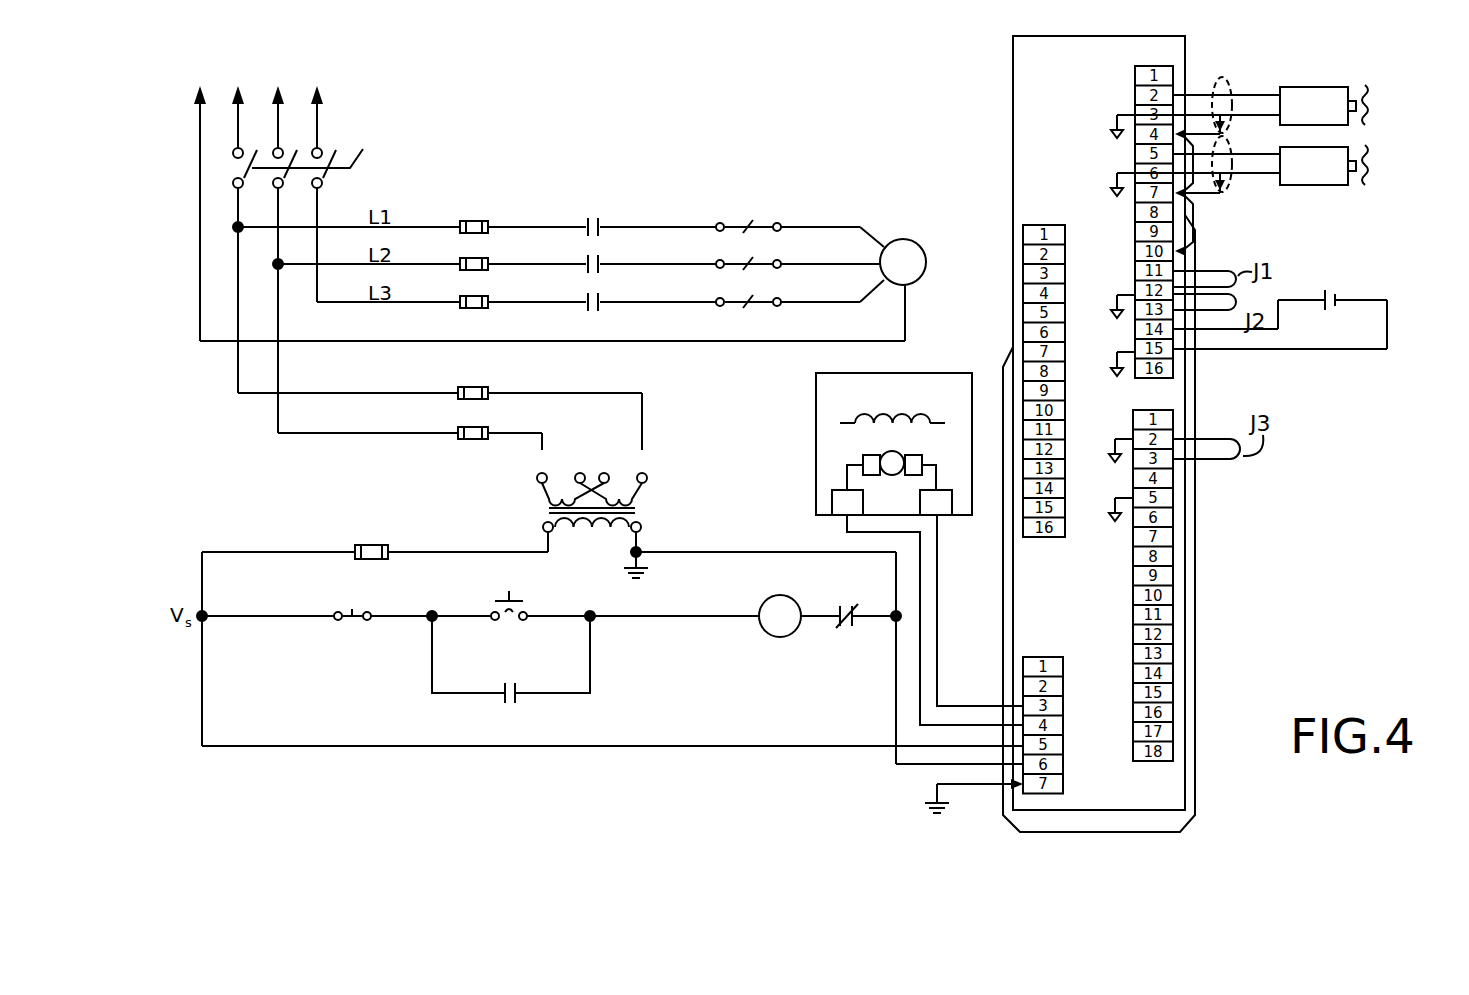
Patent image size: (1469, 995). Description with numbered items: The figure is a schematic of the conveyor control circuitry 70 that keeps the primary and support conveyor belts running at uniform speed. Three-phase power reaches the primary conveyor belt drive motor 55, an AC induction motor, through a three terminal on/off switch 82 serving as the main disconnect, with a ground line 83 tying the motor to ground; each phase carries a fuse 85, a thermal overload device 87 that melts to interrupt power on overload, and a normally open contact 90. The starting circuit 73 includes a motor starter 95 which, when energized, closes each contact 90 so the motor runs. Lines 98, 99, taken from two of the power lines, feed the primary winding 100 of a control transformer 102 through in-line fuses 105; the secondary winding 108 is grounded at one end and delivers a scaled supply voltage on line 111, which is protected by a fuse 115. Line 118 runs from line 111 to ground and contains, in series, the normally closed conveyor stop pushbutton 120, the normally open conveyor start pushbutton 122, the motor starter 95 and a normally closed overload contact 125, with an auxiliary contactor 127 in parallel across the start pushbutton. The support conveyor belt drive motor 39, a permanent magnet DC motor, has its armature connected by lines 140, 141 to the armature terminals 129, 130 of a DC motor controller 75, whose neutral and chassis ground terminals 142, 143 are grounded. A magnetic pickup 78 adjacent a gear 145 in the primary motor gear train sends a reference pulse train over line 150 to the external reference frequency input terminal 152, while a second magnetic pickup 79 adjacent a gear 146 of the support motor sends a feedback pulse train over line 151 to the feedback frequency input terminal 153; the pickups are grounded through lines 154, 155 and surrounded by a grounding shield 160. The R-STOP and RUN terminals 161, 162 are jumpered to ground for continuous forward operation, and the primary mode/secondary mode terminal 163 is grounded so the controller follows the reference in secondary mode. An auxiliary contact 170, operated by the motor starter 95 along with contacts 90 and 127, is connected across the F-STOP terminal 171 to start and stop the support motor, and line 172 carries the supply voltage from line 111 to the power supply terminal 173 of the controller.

The support conveyor belt drive motor 39 is at (816, 406).
The primary conveyor belt drive motor 55 is at (921, 246).
The conveyor control circuitry 70 is at (698, 766).
The starting circuit 73 is at (285, 762).
The DC motor controller 75 is at (1204, 828).
The magnetic pickup 78 is at (1326, 87).
The second magnetic pickup 79 is at (1310, 187).
The three terminal on/off switch 82 is at (342, 140).
The ground line 83 is at (213, 344).
The fuse 85 is at (478, 220).
The thermal overload device 87 is at (750, 222).
The normally open contact 90 is at (596, 217).
The motor starter 95 is at (771, 637).
The line 98 is at (335, 434).
The line 99 is at (335, 393).
The primary winding 100 is at (572, 466).
The control transformer 102 is at (652, 509).
The in-line fuse 105 is at (468, 390).
The control transformer secondary winding 108 is at (591, 542).
The line 111 is at (291, 560).
The fuse 115 is at (372, 562).
The line 118 is at (232, 620).
The conveyor stop pushbutton 120 is at (345, 626).
The conveyor start pushbutton 122 is at (505, 626).
The normally closed overload contact 125 is at (840, 628).
The auxiliary contactor 127 is at (510, 705).
The A1 terminal 129 is at (1066, 700).
The A2 terminal 130 is at (1066, 723).
The line 140 is at (847, 523).
The line 141 is at (940, 569).
The NEUT./L2 terminal 142 is at (1065, 766).
The CHASSIS GND terminal 143 is at (1045, 795).
The gear 145 is at (1372, 102).
The gear 146 is at (1366, 165).
The line 150 is at (1262, 94).
The line 151 is at (1266, 154).
The external reference frequency input terminal 152 is at (1131, 96).
The feedback frequency input terminal 153 is at (1133, 155).
The line 154 is at (1213, 124).
The line 155 is at (1228, 184).
The grounding shield 160 is at (1221, 78).
The R-STOP terminal 161 is at (1133, 275).
The RUN terminal 162 is at (1133, 312).
The primary mode/secondary mode terminal 163 is at (1133, 462).
The auxiliary contact 170 is at (1336, 290).
The F-STOP terminal 171 is at (1133, 334).
The line 172 is at (450, 748).
The power supply terminal 173 is at (1065, 745).